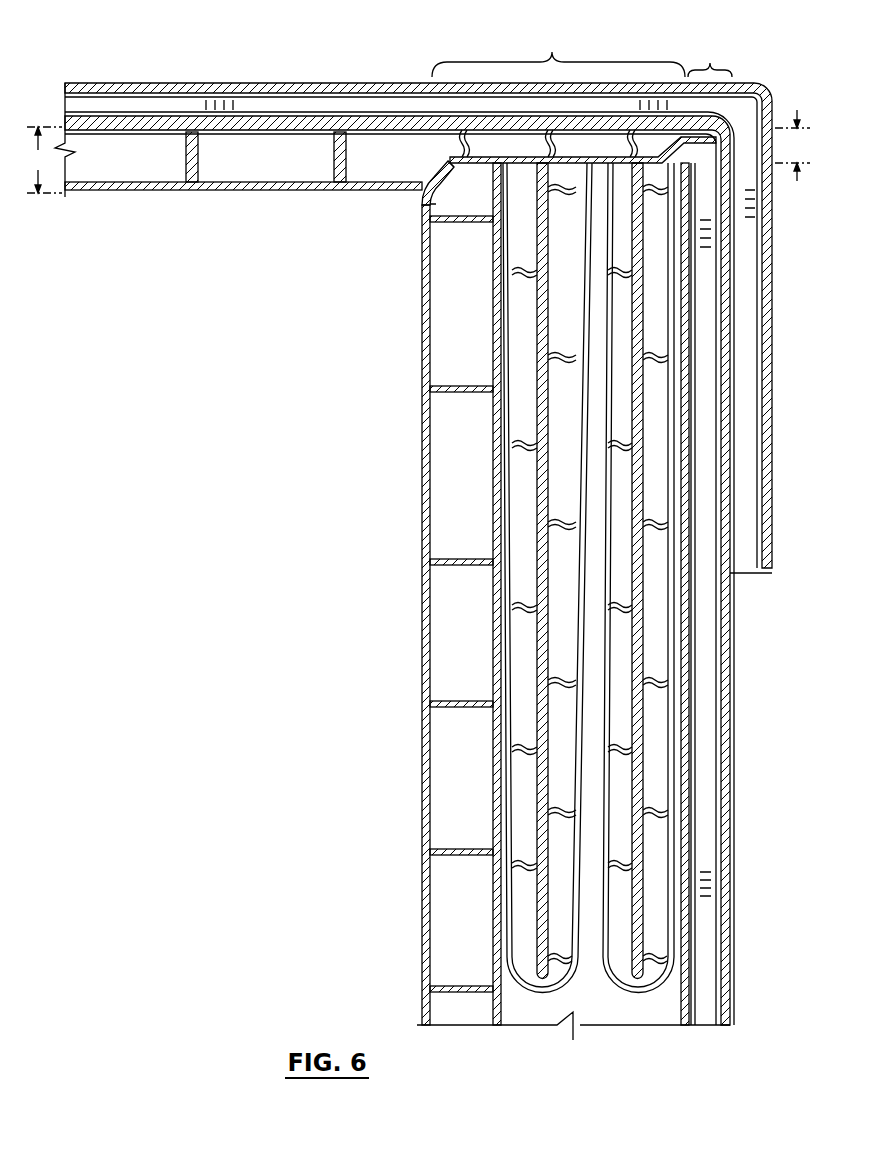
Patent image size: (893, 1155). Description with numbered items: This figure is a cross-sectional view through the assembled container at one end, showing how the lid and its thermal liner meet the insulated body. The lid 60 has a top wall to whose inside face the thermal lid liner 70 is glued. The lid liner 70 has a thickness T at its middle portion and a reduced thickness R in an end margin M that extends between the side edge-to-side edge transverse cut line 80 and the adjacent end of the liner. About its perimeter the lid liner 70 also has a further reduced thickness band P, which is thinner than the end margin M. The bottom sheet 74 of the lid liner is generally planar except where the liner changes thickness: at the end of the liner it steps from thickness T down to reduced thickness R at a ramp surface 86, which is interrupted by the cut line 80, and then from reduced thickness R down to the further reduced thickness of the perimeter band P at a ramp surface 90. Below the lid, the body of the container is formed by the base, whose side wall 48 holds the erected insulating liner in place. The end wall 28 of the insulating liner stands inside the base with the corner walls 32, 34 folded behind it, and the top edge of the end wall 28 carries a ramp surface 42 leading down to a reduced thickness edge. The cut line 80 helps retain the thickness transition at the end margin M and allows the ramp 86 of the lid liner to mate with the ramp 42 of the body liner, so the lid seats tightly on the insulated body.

The lid 60 is at (256, 83).
The transverse cut line 80 is at (436, 152).
The ramp surface 90 is at (697, 121).
The thermal lid liner 70 is at (303, 188).
The bottom sheet 74 is at (218, 184).
The ramp surface 86 is at (440, 167).
The ramp surface 42 is at (448, 170).
The end wall 28 is at (422, 468).
The side wall 48 is at (727, 717).
The corner wall 34 is at (546, 992).
The corner wall 32 is at (640, 993).
The thickness T is at (44, 160).
The reduced thickness R is at (792, 145).
The end margin M is at (558, 52).
The perimeter band P is at (710, 58).